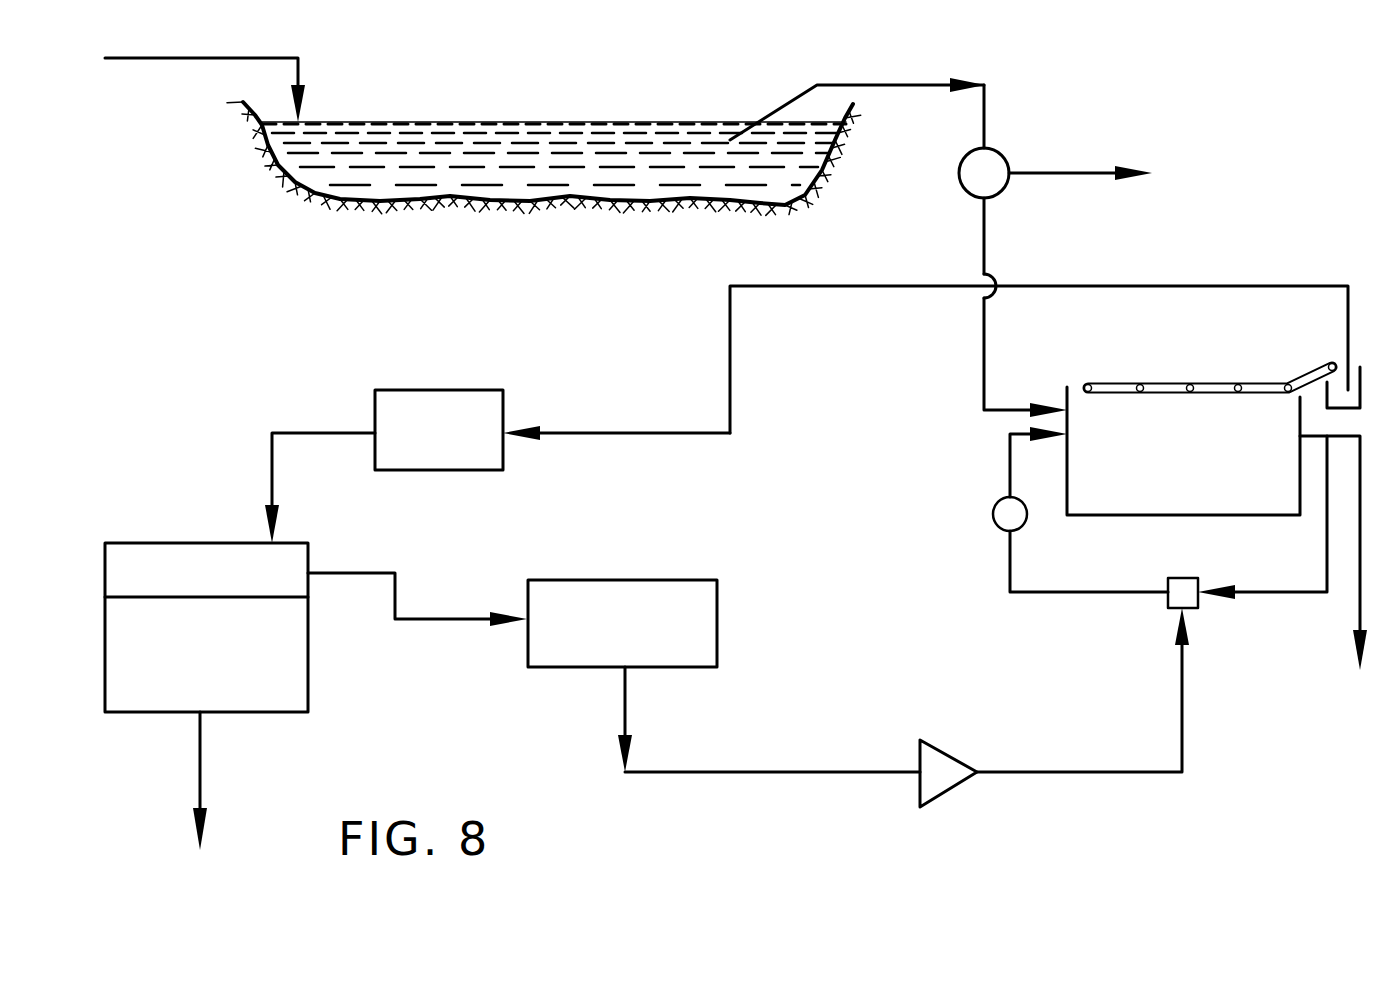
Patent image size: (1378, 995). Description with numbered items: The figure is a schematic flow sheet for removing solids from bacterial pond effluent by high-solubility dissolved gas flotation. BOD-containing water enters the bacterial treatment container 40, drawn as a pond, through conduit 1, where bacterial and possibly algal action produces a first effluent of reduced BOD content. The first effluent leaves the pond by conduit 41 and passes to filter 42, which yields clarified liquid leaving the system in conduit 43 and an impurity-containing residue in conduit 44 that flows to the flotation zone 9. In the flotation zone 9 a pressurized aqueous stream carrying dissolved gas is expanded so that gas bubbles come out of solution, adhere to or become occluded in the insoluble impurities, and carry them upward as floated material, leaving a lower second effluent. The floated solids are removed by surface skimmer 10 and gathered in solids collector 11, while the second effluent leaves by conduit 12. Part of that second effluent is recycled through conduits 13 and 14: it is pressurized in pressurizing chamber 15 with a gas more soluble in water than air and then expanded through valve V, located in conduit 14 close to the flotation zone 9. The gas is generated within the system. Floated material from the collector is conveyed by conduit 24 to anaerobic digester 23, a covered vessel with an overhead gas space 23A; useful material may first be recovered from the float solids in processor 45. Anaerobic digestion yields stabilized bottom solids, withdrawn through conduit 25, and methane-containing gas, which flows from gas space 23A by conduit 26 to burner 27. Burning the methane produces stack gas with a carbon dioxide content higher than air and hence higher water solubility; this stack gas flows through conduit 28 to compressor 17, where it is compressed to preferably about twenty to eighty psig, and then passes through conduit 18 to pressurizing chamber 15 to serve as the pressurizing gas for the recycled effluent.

The conduit 1 is at (230, 50).
The flotation zone 9 is at (1066, 473).
The surface skimmer 10 is at (1155, 365).
The solids collector 11 is at (1332, 408).
The conduit 12 is at (1313, 437).
The conduit 13 is at (1327, 538).
The conduit 14 is at (1013, 566).
The pressurizing chamber 15 is at (1192, 578).
The compressor 17 is at (950, 750).
The conduit 18 is at (1185, 706).
The anaerobic digester 23 is at (210, 542).
The overhead gas space 23A is at (205, 576).
The conduit 24 is at (818, 285).
The conduit 25 is at (205, 776).
The conduit 26 is at (336, 573).
The burner 27 is at (650, 560).
The conduit 28 is at (745, 772).
The bacterial treatment container 40 is at (832, 170).
The conduit 41 is at (912, 74).
The filter 42 is at (1004, 157).
The conduit 43 is at (1036, 173).
The conduit 44 is at (988, 243).
The processor 45 is at (491, 389).